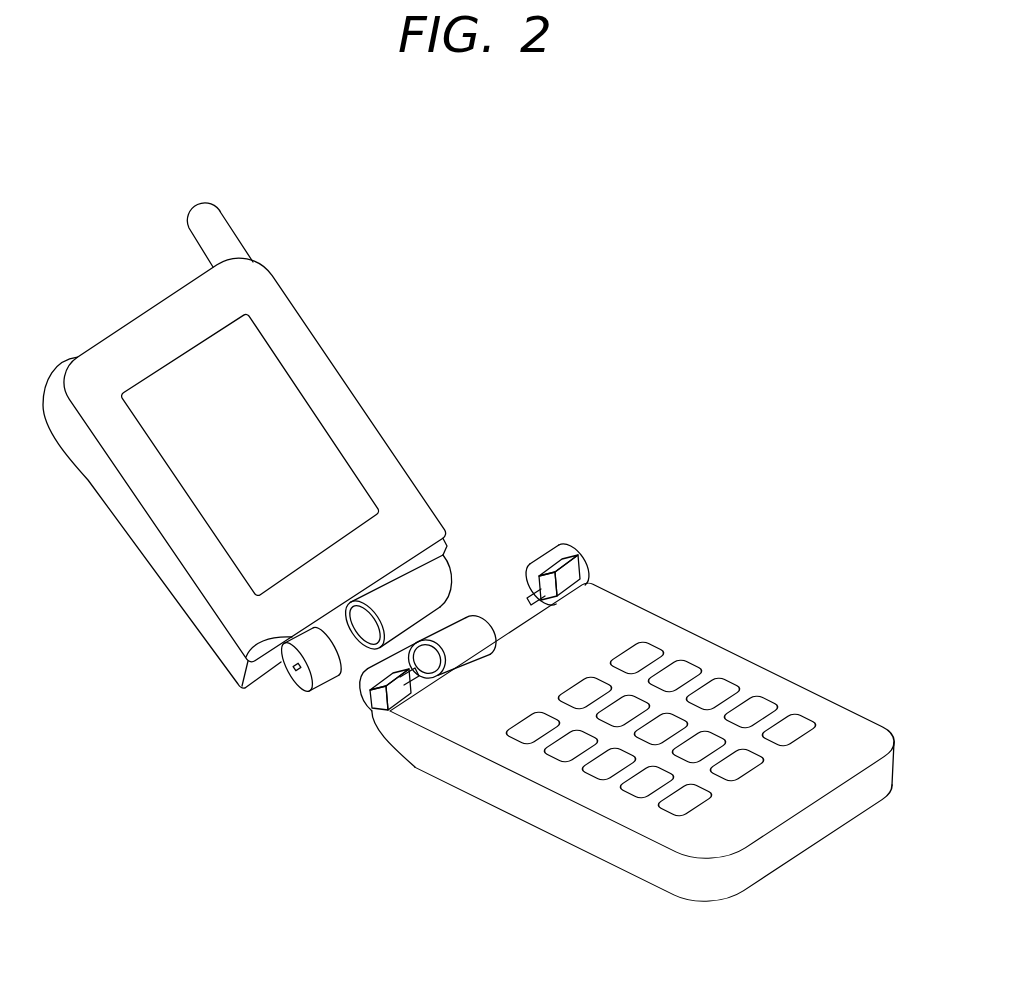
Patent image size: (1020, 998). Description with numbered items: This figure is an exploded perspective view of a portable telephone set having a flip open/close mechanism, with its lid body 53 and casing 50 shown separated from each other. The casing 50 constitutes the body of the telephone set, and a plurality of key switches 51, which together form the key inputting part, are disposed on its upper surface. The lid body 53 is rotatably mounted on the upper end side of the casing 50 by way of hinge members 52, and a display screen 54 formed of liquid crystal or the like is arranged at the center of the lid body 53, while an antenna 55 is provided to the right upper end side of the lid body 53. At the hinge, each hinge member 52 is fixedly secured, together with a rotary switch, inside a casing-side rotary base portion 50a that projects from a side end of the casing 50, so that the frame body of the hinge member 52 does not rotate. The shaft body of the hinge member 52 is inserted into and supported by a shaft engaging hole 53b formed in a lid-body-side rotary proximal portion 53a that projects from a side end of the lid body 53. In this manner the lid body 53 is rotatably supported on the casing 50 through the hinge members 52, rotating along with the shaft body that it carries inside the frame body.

The casing 50 is at (863, 706).
The casing-side rotary base portion 50a is at (552, 558).
The key switches 51 is at (653, 655).
The hinge member 52 is at (580, 556).
The lid body 53 is at (396, 441).
The lid-body-side rotary proximal portion 53a is at (441, 580).
The shaft engaging hole 53b is at (296, 670).
The display screen 54 is at (267, 380).
The antenna 55 is at (218, 238).